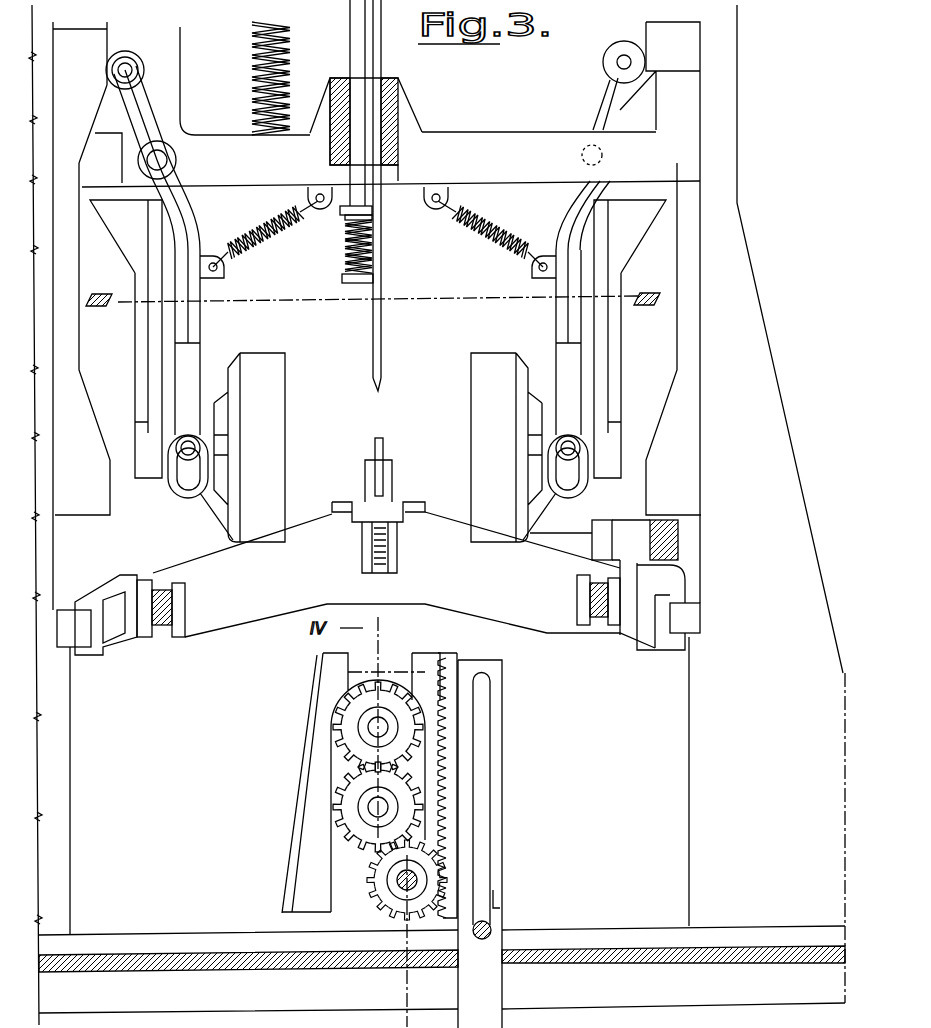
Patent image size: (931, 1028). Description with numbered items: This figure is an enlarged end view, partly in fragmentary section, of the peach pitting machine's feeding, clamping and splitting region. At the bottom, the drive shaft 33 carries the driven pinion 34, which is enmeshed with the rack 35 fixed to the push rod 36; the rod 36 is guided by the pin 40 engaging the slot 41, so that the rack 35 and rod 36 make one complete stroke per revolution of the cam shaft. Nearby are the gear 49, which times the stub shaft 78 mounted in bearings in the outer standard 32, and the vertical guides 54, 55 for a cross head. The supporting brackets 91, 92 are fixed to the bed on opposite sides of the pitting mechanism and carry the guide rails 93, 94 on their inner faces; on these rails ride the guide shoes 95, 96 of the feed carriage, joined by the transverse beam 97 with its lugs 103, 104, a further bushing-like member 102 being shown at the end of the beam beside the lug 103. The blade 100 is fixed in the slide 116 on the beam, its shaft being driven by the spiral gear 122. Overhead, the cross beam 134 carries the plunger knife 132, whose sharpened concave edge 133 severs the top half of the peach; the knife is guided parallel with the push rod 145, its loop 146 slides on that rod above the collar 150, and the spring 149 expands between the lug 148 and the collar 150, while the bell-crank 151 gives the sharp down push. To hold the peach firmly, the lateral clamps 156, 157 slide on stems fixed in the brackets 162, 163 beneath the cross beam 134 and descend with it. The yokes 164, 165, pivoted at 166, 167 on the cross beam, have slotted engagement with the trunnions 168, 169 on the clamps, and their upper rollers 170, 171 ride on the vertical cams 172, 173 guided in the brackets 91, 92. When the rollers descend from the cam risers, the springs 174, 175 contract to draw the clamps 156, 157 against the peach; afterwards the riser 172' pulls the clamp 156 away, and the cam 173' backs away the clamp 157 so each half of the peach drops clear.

The outer standard 32 is at (300, 848).
The drive shaft 33 is at (395, 888).
The driven pinion 34 is at (368, 882).
The rack 35 is at (455, 815).
The push rod 36 is at (492, 1002).
The pin 40 is at (490, 925).
The slot 41 is at (490, 862).
The gear 49 is at (340, 758).
The vertical guide 54 is at (332, 664).
The vertical guide 55 is at (432, 660).
The stub shaft 78 is at (340, 720).
The supporting bracket 91 is at (65, 888).
The supporting bracket 92 is at (797, 468).
The guide rail 93 is at (72, 625).
The guide rail 94 is at (700, 627).
The guide shoe 95 is at (96, 655).
The guide shoe 96 is at (668, 645).
The transverse beam 97 is at (290, 608).
The blade 100 is at (383, 452).
The bushing 102 is at (170, 603).
The lug 103 is at (578, 598).
The lug 104 is at (185, 620).
The slide 116 is at (396, 480).
The spiral gear 122 is at (680, 545).
The plunger knife 132 is at (387, 340).
The sharpened edge 133 is at (387, 396).
The cross beam 134 is at (500, 132).
The push rod 145 is at (350, 46).
The loop 146 is at (340, 212).
The lug 148 is at (342, 283).
The spring 149 is at (347, 262).
The collar 150 is at (383, 218).
The bell-crank 151 is at (252, 84).
The lateral clamp 156 is at (249, 447).
The lateral clamp 157 is at (506, 447).
The bracket 162 is at (137, 383).
The bracket 163 is at (627, 377).
The yoke 164 is at (186, 377).
The yoke 165 is at (560, 352).
The pivot 166 is at (162, 160).
The pivot 167 is at (582, 156).
The trunnion 168 is at (180, 462).
The trunnion 169 is at (578, 455).
The roller 170 is at (143, 65).
The roller 171 is at (603, 62).
The vertical cam 172 is at (87, 307).
The riser 172' is at (82, 350).
The vertical cam 173 is at (660, 301).
The cam 173' is at (668, 339).
The spring 174 is at (258, 235).
The spring 175 is at (532, 240).